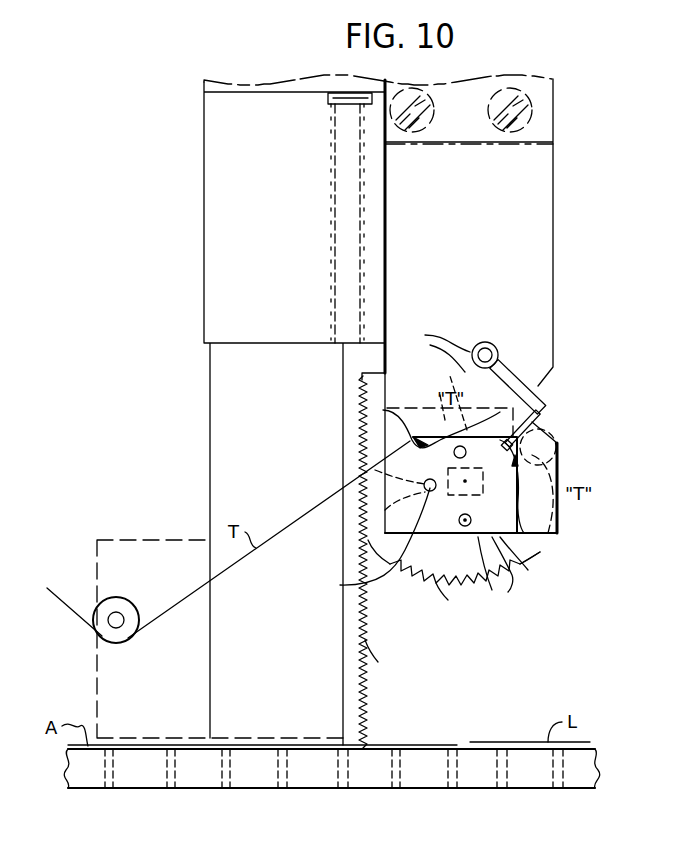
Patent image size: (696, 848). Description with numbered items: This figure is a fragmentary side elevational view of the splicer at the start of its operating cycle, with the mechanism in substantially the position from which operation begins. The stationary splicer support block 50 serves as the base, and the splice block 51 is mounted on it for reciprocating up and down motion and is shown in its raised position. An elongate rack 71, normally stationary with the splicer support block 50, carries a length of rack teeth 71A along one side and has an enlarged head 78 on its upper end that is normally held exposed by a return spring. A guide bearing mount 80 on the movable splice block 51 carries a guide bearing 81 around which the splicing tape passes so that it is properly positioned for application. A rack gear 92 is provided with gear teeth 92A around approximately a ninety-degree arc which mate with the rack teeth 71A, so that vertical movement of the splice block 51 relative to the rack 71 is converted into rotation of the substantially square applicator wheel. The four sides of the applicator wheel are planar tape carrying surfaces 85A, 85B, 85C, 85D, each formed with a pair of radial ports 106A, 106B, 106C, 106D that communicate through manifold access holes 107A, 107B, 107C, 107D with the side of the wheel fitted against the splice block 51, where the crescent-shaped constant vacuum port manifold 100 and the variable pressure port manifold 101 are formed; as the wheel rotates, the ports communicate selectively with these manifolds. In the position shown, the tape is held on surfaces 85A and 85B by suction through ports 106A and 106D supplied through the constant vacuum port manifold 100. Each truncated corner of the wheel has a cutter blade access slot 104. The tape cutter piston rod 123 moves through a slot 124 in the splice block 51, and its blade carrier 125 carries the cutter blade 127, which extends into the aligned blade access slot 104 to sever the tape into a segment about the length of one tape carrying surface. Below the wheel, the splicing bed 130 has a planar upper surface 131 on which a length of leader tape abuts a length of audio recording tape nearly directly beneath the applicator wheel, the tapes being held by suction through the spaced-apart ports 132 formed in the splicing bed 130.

The splicer support block 50 is at (258, 418).
The splice block 51 is at (467, 206).
The enlarged head 78 is at (345, 92).
The guide bearing mount 80 is at (162, 696).
The guide bearing 81 is at (116, 612).
The rack 71 is at (368, 705).
The rack teeth 71A is at (388, 668).
The rack gear 92 is at (410, 578).
The gear teeth 92A is at (446, 590).
The constant vacuum port manifold 100 is at (525, 533).
The variable pressure port manifold 101 is at (510, 590).
The cutter blade access slot 104 is at (376, 408).
The port 106A is at (548, 436).
The port 106B is at (460, 528).
The port 106C is at (424, 483).
The port 106D is at (410, 443).
The manifold access hole 107A is at (560, 458).
The manifold access hole 107B is at (500, 580).
The manifold access hole 107C is at (385, 510).
The manifold access hole 107D is at (468, 372).
The tape carrying surface 85A is at (520, 522).
The tape carrying surface 85B is at (510, 556).
The tape carrying surface 85C is at (340, 586).
The tape carrying surface 85D is at (470, 412).
The tape cutter piston rod 123 is at (485, 348).
The slot 124 is at (473, 350).
The blade carrier 125 is at (518, 375).
The cutter blade 127 is at (541, 420).
The splicing bed 130 is at (488, 788).
The upper surface 131 is at (594, 748).
The ports 132 is at (222, 790).